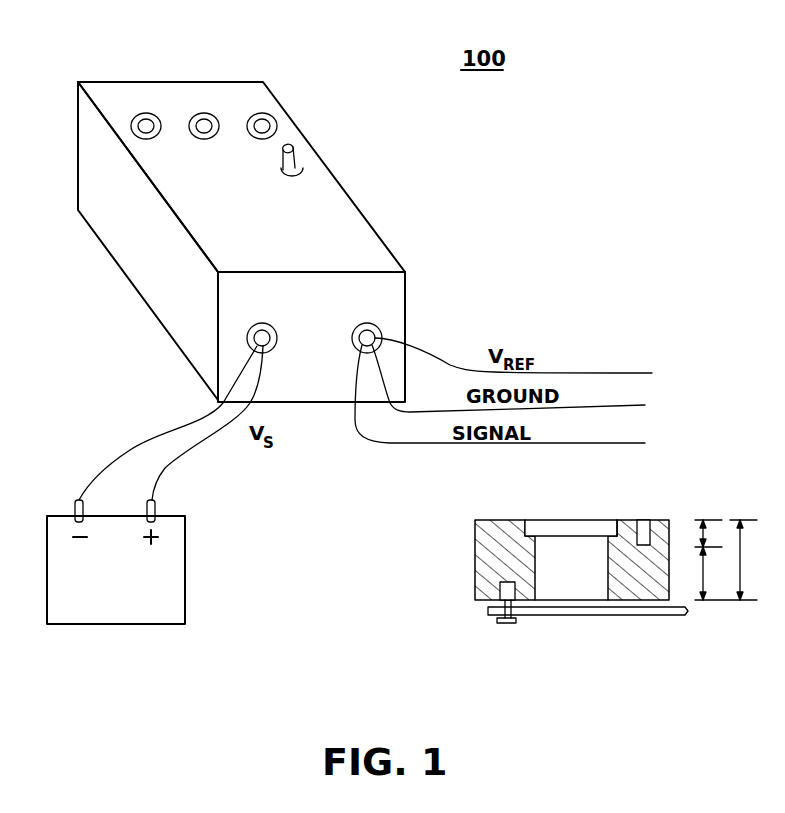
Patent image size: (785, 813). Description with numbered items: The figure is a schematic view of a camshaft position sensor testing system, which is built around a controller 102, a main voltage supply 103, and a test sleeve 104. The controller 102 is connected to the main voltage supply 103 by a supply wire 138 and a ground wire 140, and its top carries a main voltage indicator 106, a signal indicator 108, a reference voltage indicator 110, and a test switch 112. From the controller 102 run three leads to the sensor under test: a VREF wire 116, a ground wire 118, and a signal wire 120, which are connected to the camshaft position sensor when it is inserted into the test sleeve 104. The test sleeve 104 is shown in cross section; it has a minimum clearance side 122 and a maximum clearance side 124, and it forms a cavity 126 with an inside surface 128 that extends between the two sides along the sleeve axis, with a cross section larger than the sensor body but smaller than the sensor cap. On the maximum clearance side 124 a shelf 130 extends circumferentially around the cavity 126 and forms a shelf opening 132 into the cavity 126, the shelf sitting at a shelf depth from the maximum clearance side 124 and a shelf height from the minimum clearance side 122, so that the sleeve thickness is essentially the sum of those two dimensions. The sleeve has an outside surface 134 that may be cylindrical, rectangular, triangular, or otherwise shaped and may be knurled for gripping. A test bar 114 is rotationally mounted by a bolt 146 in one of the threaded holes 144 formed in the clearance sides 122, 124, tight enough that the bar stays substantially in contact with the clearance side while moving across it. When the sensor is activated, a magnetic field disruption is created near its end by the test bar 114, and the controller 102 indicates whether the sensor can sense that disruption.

The controller 102 is at (337, 203).
The main voltage supply 103 is at (72, 547).
The test sleeve 104 is at (565, 564).
The main voltage indicator 106 is at (147, 124).
The signal indicator 108 is at (204, 124).
The reference voltage indicator 110 is at (262, 124).
The test switch 112 is at (295, 156).
The test bar 114 is at (643, 614).
The VREF wire 116 is at (595, 373).
The ground wire 118 is at (612, 405).
The signal wire 120 is at (621, 443).
The minimum clearance side 122 is at (533, 602).
The maximum clearance side 124 is at (638, 520).
The cavity 126 is at (555, 555).
The inside surface 128 is at (608, 577).
The shelf 130 is at (615, 520).
The shelf opening 132 is at (530, 520).
The outside surface 134 is at (475, 538).
The supply wire 138 is at (193, 460).
The ground wire 140 is at (158, 433).
The threaded holes 144 is at (505, 590).
The bolt 146 is at (505, 623).